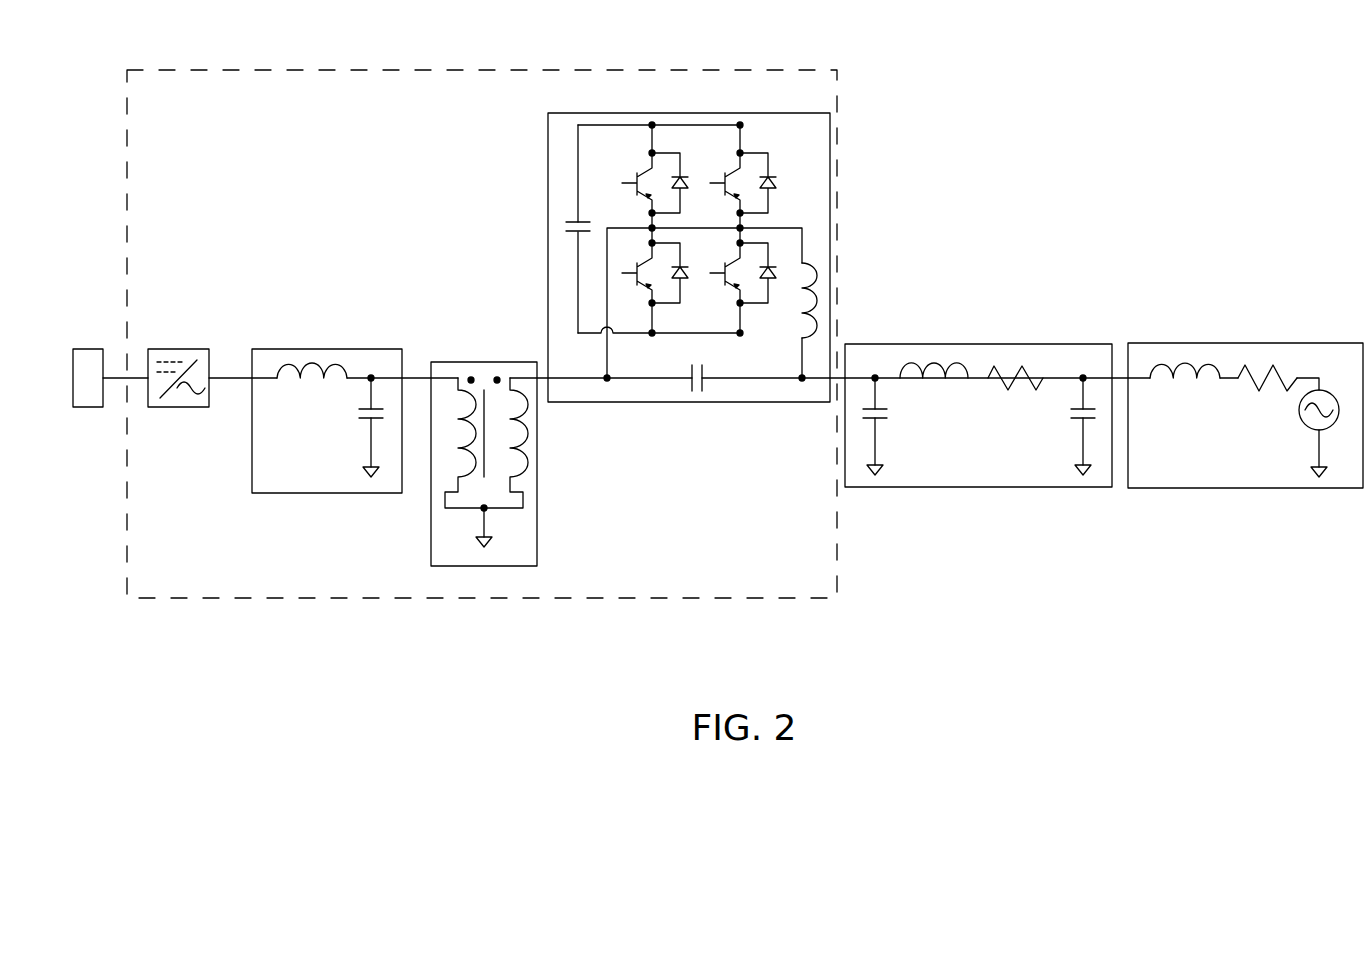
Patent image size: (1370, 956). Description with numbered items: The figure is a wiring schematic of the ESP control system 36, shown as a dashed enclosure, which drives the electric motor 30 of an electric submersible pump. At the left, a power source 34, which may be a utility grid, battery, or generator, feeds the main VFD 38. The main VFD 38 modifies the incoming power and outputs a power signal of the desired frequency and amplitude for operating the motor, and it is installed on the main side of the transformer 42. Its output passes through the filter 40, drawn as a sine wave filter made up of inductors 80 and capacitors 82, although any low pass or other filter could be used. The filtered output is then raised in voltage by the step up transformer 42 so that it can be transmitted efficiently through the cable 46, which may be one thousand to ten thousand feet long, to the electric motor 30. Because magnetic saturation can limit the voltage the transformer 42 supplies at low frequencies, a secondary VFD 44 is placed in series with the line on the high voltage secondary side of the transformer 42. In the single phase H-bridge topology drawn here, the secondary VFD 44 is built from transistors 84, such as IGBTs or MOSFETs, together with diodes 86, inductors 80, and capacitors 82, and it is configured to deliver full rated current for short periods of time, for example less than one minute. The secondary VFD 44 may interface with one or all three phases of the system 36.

The electric motor 30 is at (1245, 343).
The power source 34 is at (88, 349).
The ESP control system 36 is at (745, 70).
The main VFD 38 is at (178, 349).
The filter 40 is at (328, 349).
The step up transformer 42 is at (483, 362).
The secondary VFD 44 is at (742, 402).
The cable 46 is at (978, 344).
The inductors 80 is at (310, 383).
The capacitors 82 is at (363, 418).
The transistors 84 is at (634, 183).
The diodes 86 is at (775, 180).